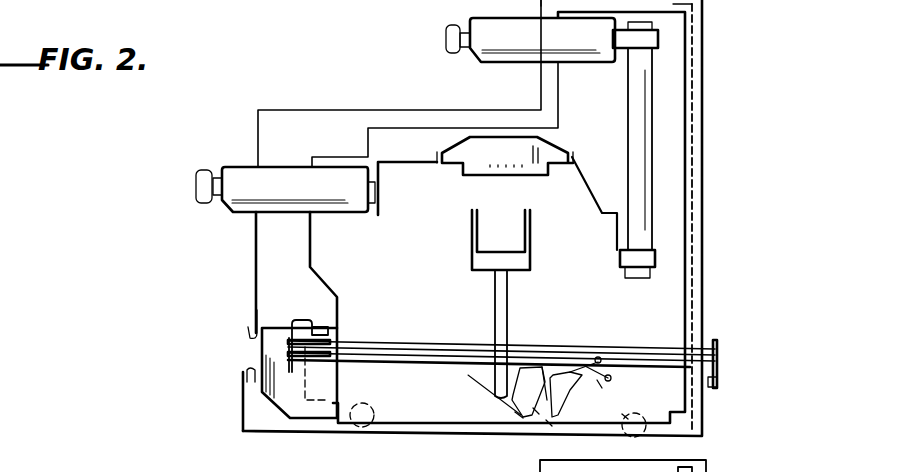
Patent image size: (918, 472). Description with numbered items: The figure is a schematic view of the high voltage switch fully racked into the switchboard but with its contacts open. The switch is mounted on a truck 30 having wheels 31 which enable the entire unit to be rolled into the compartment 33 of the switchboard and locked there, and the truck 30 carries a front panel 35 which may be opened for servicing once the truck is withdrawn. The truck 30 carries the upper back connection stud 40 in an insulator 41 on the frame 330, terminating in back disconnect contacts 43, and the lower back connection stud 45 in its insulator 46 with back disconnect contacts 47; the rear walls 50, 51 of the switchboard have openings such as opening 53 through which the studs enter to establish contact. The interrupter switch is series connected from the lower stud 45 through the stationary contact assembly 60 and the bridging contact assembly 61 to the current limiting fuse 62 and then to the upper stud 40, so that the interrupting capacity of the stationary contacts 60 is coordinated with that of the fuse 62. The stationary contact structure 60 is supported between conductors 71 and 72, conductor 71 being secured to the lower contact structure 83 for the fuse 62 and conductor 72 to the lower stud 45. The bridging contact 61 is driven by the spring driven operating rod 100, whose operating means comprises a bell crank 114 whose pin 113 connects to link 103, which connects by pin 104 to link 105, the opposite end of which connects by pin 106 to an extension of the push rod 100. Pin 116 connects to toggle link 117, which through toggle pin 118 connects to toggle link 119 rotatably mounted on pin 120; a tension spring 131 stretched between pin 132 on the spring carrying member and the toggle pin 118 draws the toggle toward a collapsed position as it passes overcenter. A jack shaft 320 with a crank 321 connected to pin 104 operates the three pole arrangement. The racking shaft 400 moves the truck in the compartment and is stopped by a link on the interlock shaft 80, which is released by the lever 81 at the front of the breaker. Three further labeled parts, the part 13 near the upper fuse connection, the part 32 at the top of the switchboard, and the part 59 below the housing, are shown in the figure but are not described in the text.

The cylinder rod end block 13 is at (658, 40).
The truck 30 is at (418, 292).
The wheels 31 is at (760, 1).
The upper conduit 32 is at (539, 12).
The compartment 33 is at (277, 419).
The front panel 35 is at (692, 219).
The upper back connection stud 40 is at (468, 50).
The insulator 41 is at (484, 60).
The back disconnect contacts 43 is at (449, 54).
The lower back connection stud 45 is at (221, 176).
The insulator 46 is at (283, 212).
The back disconnect contacts 47 is at (200, 205).
The rear wall 50 is at (550, 95).
The rear wall 51 is at (252, 290).
The opening 53 is at (255, 162).
The lower box 59 is at (538, 462).
The stationary contact assembly 60 is at (474, 162).
The bridging contact assembly 61 is at (473, 236).
The current limiting fuse 62 is at (652, 154).
The conductor 71 is at (597, 203).
The conductor 72 is at (392, 166).
The interlock shaft 80 is at (710, 342).
The lever 81 is at (719, 380).
The lower contact structure 83 is at (656, 259).
The operating rod 100 is at (494, 306).
The link 103 is at (537, 414).
The pin 104 is at (520, 418).
The link 105 is at (507, 410).
The pin 106 is at (517, 396).
The pin 113 is at (549, 427).
The bell crank 114 is at (543, 398).
The pin 116 is at (583, 387).
The toggle link 117 is at (627, 418).
The toggle pin 118 is at (577, 364).
The toggle link 119 is at (596, 380).
The pin 120 is at (611, 378).
The tension spring 131 is at (600, 361).
The pin 132 is at (607, 363).
The jack shaft 320 is at (470, 400).
The crank 321 is at (487, 396).
The frame 330 is at (612, 129).
The racking shaft 400 is at (403, 366).